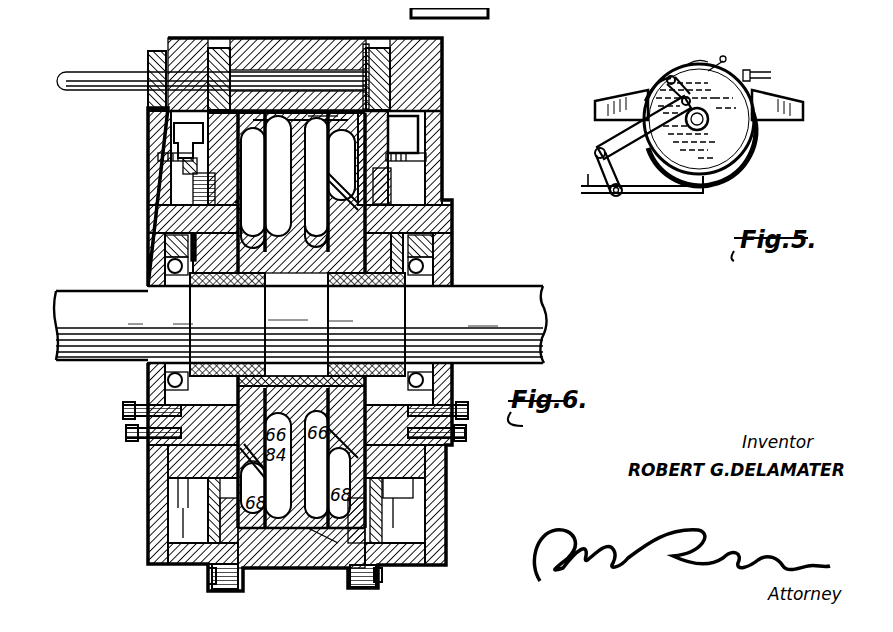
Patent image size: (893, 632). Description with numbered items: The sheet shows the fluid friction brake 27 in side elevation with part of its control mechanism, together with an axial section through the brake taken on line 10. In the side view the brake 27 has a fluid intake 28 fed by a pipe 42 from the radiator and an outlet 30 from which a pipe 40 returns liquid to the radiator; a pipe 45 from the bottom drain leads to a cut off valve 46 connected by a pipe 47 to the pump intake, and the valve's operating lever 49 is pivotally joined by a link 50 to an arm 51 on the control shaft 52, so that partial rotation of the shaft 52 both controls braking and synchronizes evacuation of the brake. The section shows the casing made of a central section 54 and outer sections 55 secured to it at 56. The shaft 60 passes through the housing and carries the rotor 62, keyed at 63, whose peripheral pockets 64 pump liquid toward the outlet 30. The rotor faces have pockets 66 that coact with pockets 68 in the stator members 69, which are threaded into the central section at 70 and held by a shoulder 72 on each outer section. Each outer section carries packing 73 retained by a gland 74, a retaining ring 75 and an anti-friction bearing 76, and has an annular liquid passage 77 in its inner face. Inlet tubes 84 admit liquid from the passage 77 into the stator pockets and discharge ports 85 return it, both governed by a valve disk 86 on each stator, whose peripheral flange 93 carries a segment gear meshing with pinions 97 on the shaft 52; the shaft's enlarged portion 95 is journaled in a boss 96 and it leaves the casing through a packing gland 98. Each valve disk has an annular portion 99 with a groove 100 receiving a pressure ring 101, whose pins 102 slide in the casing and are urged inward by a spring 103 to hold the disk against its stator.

In FIG. 6, the section line 10 is at (205, 18).
In FIG. 6, the fluid friction brake 27 is at (449, 99).
In FIG. 5, the fluid friction brake 27 is at (745, 142).
In FIG. 5, the fluid intake 28 is at (745, 62).
In FIG. 5, the outlet 30 is at (683, 55).
In FIG. 5, the pipe 40 is at (716, 49).
In FIG. 5, the pipe 42 is at (770, 70).
In FIG. 5, the pipe 45 is at (671, 186).
In FIG. 5, the cut off valve 46 is at (605, 188).
In FIG. 5, the pipe 47 is at (577, 175).
In FIG. 5, the operating lever 49 is at (603, 158).
In FIG. 5, the link 50 is at (603, 132).
In FIG. 5, the arm 51 is at (650, 80).
In FIG. 6, the shaft 52 is at (96, 66).
In FIG. 5, the shaft 52 is at (662, 69).
In FIG. 6, the central section 54 is at (280, 562).
In FIG. 6, the outer sections 55 is at (445, 70).
In FIG. 6, the securing means 56 is at (200, 568).
In FIG. 6, the shaft 60 is at (300, 324).
In FIG. 6, the rotor 62 is at (282, 268).
In FIG. 6, the key 63 is at (301, 385).
In FIG. 6, the pockets 64 is at (265, 557).
In FIG. 6, the pockets 66 is at (286, 225).
In FIG. 6, the pockets 68 is at (299, 182).
In FIG. 6, the stator members 69 is at (281, 324).
In FIG. 6, the threaded connection 70 is at (328, 556).
In FIG. 6, the shoulder 72 is at (212, 280).
In FIG. 6, the packing 73 is at (220, 268).
In FIG. 6, the gland 74 is at (190, 270).
In FIG. 6, the retaining ring 75 is at (150, 232).
In FIG. 6, the anti-friction bearing 76 is at (152, 251).
In FIG. 6, the annular liquid passage 77 is at (435, 110).
In FIG. 6, the inlet tubes 84 is at (284, 176).
In FIG. 6, the discharge ports 85 is at (256, 137).
In FIG. 6, the valve disk 86 is at (185, 178).
In FIG. 6, the peripheral flange 93 is at (160, 557).
In FIG. 6, the enlarged portion 95 is at (296, 66).
In FIG. 6, the boss 96 is at (360, 40).
In FIG. 6, the pinions 97 is at (212, 44).
In FIG. 6, the packing gland 98 is at (155, 43).
In FIG. 6, the outstanding annular portion 99 is at (448, 451).
In FIG. 6, the annular groove 100 is at (255, 478).
In FIG. 6, the pressure ring 101 is at (178, 485).
In FIG. 6, the pins 102 is at (152, 150).
In FIG. 6, the spring 103 is at (160, 140).